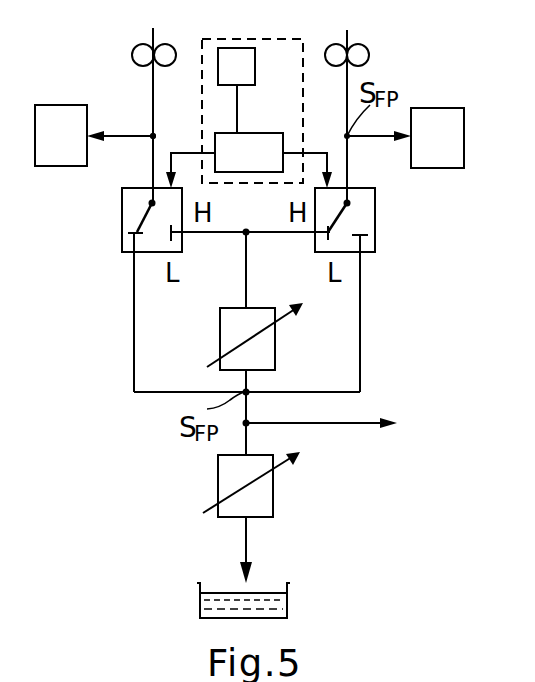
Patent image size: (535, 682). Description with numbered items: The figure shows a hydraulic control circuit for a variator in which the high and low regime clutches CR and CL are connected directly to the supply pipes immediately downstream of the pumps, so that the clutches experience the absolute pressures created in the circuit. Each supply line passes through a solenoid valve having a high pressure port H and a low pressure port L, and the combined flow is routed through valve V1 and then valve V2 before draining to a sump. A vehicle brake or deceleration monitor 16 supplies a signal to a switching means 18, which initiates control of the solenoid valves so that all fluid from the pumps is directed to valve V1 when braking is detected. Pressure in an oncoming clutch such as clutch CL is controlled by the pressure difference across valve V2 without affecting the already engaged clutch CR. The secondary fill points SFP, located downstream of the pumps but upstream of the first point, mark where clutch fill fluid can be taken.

The vehicle brake/deceleration monitor 16 is at (238, 48).
The switching means 18 is at (260, 133).
The valve V1 is at (276, 340).
The valve V2 is at (275, 487).
The clutch CL is at (61, 135).
The clutch CR is at (437, 138).
The secondary fill point SFP is at (153, 136).